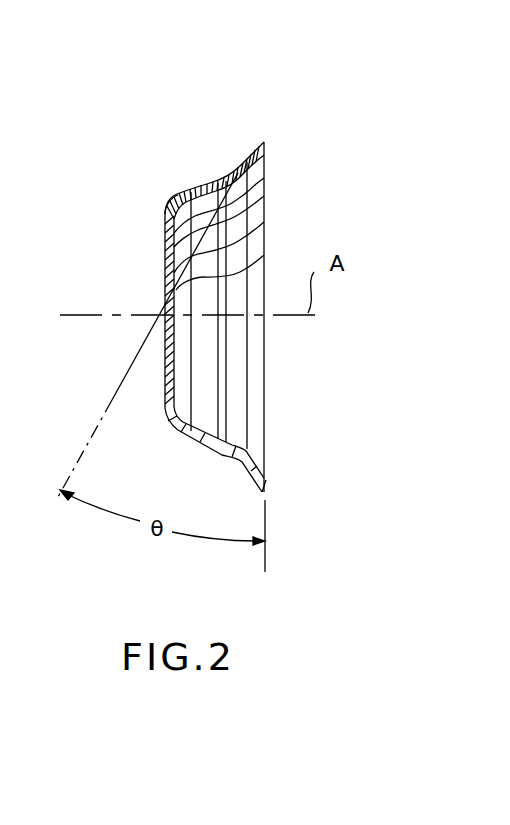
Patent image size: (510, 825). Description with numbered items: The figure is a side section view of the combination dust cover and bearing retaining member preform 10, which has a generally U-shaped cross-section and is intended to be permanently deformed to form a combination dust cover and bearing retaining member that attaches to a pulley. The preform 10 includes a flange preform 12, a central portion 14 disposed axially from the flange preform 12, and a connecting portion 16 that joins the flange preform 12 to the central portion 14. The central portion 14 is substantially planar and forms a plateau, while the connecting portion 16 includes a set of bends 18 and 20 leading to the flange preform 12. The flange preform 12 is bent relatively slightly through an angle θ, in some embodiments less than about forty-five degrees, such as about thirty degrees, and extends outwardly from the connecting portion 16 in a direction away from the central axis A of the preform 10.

The combination dust cover and bearing retaining member preform 10 is at (287, 168).
The flange preform 12 is at (242, 160).
The central portion 14 is at (166, 265).
The connecting portion 16 is at (200, 446).
The bend 18 is at (166, 210).
The bend 20 is at (226, 184).